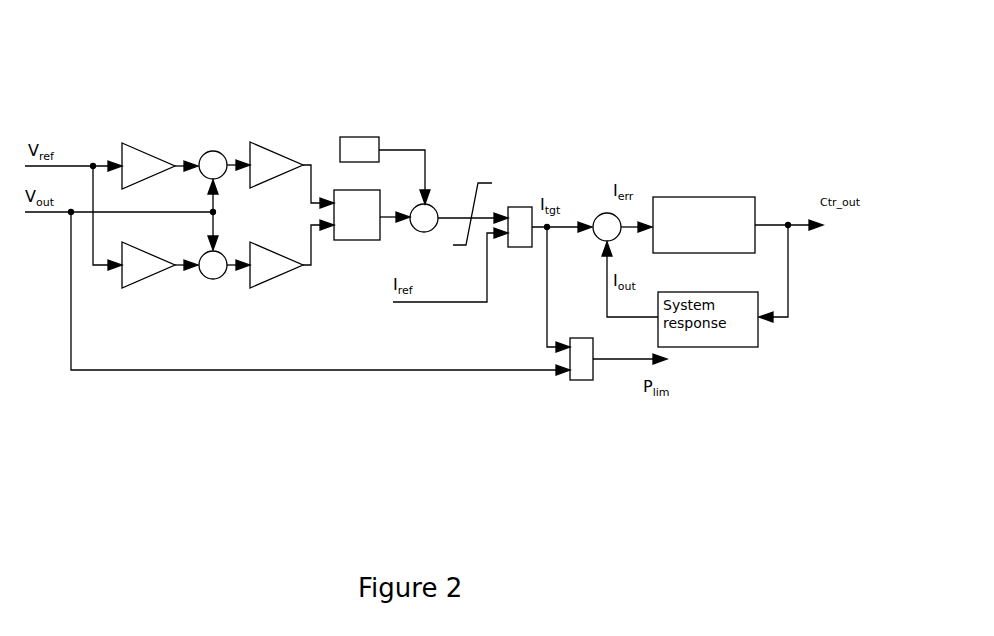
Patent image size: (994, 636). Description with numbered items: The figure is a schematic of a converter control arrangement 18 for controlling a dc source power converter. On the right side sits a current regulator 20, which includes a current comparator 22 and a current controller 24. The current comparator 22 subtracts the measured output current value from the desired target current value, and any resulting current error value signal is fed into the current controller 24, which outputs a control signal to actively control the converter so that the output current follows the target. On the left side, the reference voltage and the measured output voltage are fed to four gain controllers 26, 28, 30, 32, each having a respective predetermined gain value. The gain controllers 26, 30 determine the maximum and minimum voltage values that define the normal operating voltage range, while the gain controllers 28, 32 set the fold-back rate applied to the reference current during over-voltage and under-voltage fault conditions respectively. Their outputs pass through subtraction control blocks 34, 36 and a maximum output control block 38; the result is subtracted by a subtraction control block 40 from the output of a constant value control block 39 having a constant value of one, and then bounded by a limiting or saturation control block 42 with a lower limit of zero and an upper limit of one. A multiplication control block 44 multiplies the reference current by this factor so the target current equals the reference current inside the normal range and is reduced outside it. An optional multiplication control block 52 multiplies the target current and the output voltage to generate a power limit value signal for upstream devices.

The converter control arrangement 18 is at (133, 53).
The current regulator 20 is at (722, 160).
The current comparator 22 is at (600, 213).
The current controller 24 is at (722, 228).
The gain controller 26 is at (148, 150).
The gain controller 28 is at (275, 150).
The gain controller 30 is at (150, 280).
The gain controller 32 is at (275, 283).
The subtraction control block 34 is at (212, 150).
The subtraction control block 36 is at (213, 283).
The maximum output control block 38 is at (352, 242).
The constant value control block 39 is at (360, 137).
The subtraction control block 40 is at (432, 205).
The limiting or saturation control block 42 is at (464, 196).
The multiplication control block 44 is at (520, 250).
The multiplication control block 52 is at (580, 382).